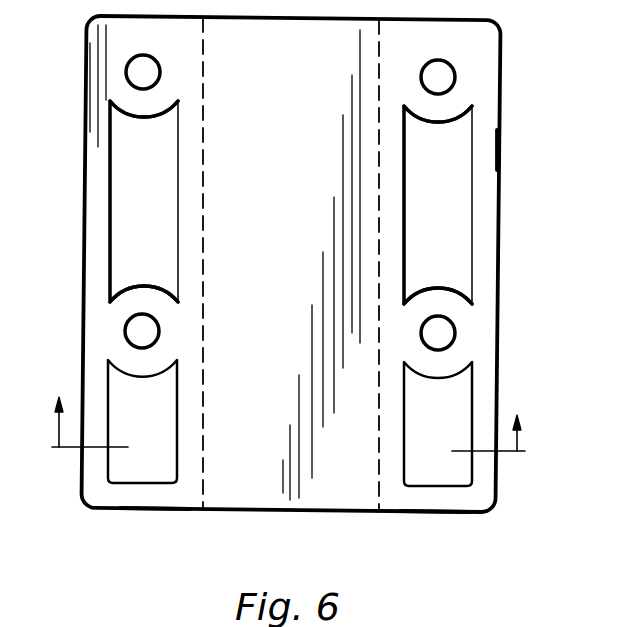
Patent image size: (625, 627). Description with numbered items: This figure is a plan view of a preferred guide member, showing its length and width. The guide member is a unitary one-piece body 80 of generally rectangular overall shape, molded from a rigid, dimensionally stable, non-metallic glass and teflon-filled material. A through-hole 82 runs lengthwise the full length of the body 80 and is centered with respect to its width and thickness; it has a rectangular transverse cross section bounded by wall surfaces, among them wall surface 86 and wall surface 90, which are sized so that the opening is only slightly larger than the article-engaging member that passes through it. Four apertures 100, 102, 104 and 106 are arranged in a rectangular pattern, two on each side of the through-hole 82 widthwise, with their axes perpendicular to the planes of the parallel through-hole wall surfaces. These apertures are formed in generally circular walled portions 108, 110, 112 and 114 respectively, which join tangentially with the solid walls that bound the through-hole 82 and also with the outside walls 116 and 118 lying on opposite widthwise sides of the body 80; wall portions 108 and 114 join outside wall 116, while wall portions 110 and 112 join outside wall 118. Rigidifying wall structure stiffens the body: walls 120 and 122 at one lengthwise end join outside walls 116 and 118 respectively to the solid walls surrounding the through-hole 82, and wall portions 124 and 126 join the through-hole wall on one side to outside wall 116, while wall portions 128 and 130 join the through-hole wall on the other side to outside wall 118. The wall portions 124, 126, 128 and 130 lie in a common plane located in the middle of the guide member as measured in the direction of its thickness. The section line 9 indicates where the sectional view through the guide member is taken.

The section line 9- 9 is at (285, 433).
The body 80 is at (87, 513).
The through-hole 82 is at (372, 462).
The wall surface 86 is at (372, 188).
The wall surface 90 is at (205, 422).
The aperture 100 is at (133, 70).
The aperture 102 is at (445, 77).
The aperture 104 is at (446, 333).
The aperture 106 is at (130, 332).
The circular walled portion 108 is at (141, 103).
The circular walled portion 110 is at (433, 105).
The circular walled portion 112 is at (438, 303).
The circular walled portion 114 is at (145, 300).
The outside wall 116 is at (92, 171).
The outside wall 118 is at (481, 160).
The rigidifying wall 120 is at (143, 497).
The rigidifying wall 122 is at (428, 502).
The rigidifying wall portion 124 is at (157, 408).
The rigidifying wall portion 126 is at (152, 190).
The rigidifying wall portion 128 is at (455, 413).
The rigidifying wall portion 130 is at (457, 230).